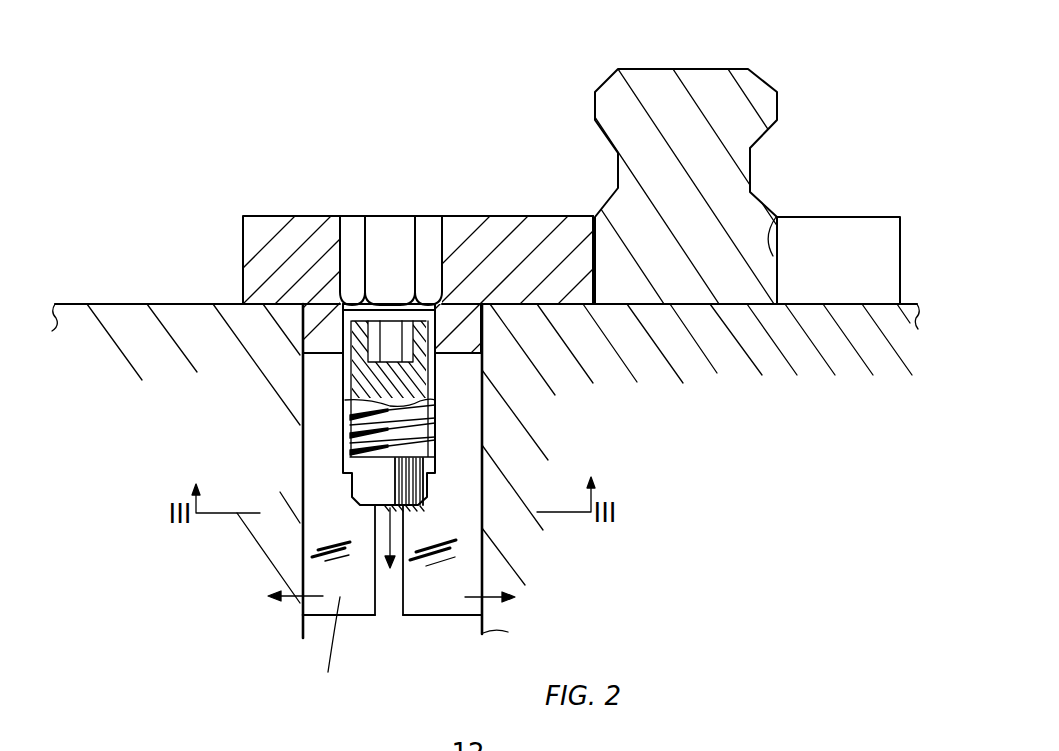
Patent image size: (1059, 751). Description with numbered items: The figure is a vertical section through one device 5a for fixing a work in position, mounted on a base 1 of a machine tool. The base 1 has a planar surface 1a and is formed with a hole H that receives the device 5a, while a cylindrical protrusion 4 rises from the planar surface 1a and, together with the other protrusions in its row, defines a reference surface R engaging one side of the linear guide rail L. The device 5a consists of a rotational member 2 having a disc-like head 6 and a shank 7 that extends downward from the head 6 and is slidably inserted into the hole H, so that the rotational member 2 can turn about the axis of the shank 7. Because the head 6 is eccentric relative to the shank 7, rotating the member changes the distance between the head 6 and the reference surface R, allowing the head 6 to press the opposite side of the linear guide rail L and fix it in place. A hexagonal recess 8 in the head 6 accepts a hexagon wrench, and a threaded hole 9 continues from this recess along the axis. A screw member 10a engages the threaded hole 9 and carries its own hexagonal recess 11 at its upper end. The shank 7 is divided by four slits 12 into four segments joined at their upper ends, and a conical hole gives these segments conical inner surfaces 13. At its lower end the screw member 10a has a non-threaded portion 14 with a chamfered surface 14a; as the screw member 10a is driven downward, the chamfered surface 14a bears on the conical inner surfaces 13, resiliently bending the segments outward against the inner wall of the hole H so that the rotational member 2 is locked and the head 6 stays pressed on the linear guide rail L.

The base 1 is at (105, 318).
The planar surface 1a is at (130, 303).
The rotational member 2 is at (606, 265).
The cylindrical protrusion 4 is at (862, 222).
The device for fixing a work in position 5a is at (234, 272).
The disc-like head 6 is at (562, 220).
The shank 7 is at (486, 343).
The hexagonal recess 8 is at (442, 256).
The threaded hole 9 is at (345, 390).
The screw member 10a is at (425, 429).
The hexagonal recess 11 is at (368, 338).
The slit 12 is at (452, 600).
The conical inner surface 13 is at (420, 506).
The non-threaded portion 14 is at (368, 490).
The chamfered surface 14a is at (373, 508).
The hole H is at (298, 633).
The linear guide rail L is at (720, 78).
The reference surface R is at (776, 217).